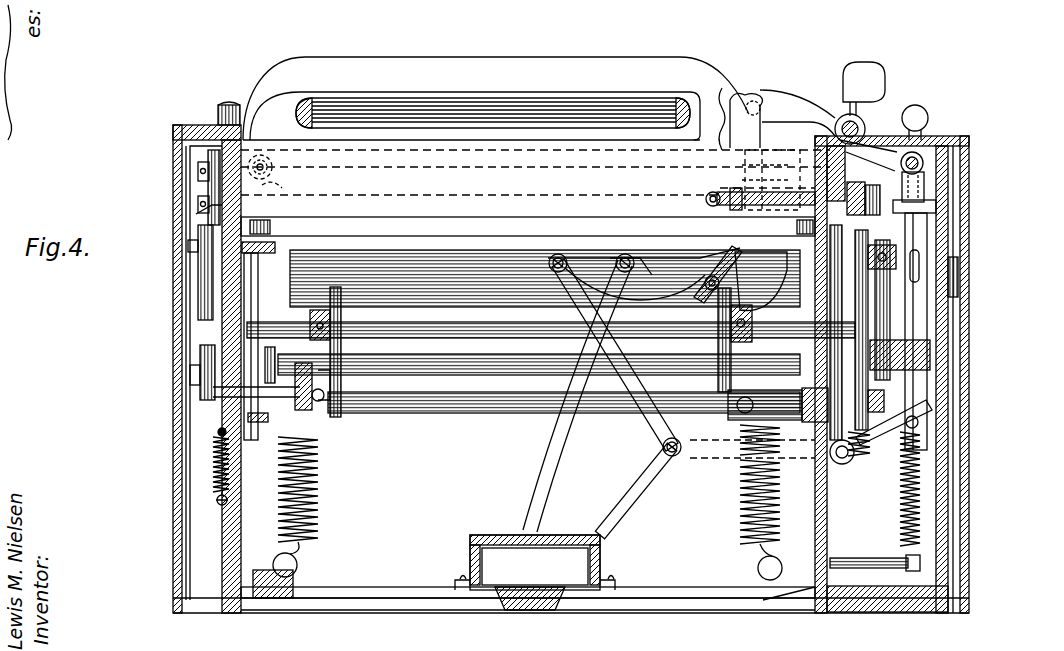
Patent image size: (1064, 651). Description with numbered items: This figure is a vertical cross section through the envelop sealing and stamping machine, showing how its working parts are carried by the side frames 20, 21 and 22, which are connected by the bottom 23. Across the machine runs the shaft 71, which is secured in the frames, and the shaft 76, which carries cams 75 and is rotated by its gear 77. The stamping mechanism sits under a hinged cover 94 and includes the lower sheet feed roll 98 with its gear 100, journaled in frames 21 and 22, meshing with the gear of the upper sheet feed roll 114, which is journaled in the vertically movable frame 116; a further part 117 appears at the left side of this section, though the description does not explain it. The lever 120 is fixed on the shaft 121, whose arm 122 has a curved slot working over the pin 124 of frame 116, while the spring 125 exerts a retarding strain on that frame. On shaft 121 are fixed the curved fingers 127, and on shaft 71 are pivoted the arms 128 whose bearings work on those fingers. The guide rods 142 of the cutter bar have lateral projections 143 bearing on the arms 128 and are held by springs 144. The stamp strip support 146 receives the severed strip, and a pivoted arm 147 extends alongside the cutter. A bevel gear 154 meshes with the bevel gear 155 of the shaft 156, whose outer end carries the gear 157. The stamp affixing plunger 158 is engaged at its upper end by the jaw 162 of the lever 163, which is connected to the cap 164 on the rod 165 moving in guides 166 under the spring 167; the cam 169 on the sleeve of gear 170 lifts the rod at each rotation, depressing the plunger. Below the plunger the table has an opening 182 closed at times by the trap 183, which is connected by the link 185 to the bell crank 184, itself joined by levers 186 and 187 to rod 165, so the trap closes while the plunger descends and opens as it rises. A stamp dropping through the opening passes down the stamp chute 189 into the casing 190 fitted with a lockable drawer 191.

The side frame 20 is at (968, 510).
The side frame 21 is at (827, 513).
The side frame 22 is at (222, 561).
The bottom 23 is at (705, 600).
The shaft 71 is at (445, 416).
The cam 75 is at (342, 342).
The shaft 76 is at (450, 333).
The gear 77 is at (881, 352).
The hinged cover 94 is at (562, 57).
The sheet feed roll 98 is at (198, 204).
The gear 100 is at (200, 213).
The upper sheet feed roll 114 is at (198, 174).
The vertically movable frame 116 is at (215, 395).
The shaft 117 is at (200, 151).
The lever 120 is at (864, 89).
The shaft 121 is at (457, 376).
The arm 122 is at (200, 385).
The pin 124 is at (216, 503).
The spring 125 is at (213, 466).
The curved fingers 127 is at (218, 434).
The arms 128 is at (195, 410).
The guide rods 142 is at (198, 310).
The lateral projections 143 is at (333, 415).
The springs 144 is at (305, 518).
The stamp strip support 146 is at (635, 259).
The arm 147 is at (436, 175).
The bevel gear 154 is at (706, 199).
The bevel gear 155 is at (761, 211).
The shaft 156 is at (800, 205).
The gear 157 is at (855, 300).
The stamp affixing plunger 158 is at (772, 118).
The jaw 162 is at (775, 97).
The lever 163 is at (882, 128).
The cap 164 is at (925, 178).
The rod 165 is at (948, 228).
The guides 166 is at (948, 206).
The spring 167 is at (900, 526).
The cam 169 is at (960, 288).
The gear 170 is at (900, 312).
The opening 182 is at (730, 258).
The trap 183 is at (728, 290).
The bell crank 184 is at (572, 252).
The link 185 is at (688, 268).
The lever 186 is at (645, 420).
The lever 187 is at (705, 462).
The stamp chute 189 is at (615, 498).
The casing 190 is at (605, 553).
The drawer 191 is at (578, 598).